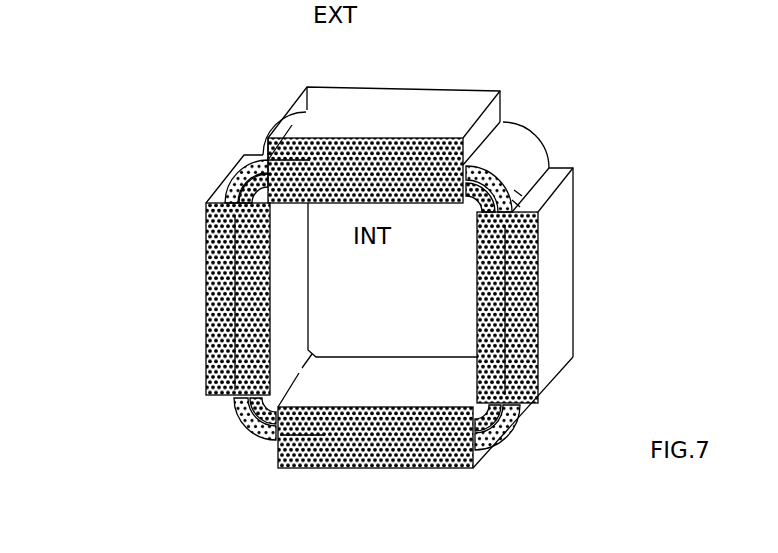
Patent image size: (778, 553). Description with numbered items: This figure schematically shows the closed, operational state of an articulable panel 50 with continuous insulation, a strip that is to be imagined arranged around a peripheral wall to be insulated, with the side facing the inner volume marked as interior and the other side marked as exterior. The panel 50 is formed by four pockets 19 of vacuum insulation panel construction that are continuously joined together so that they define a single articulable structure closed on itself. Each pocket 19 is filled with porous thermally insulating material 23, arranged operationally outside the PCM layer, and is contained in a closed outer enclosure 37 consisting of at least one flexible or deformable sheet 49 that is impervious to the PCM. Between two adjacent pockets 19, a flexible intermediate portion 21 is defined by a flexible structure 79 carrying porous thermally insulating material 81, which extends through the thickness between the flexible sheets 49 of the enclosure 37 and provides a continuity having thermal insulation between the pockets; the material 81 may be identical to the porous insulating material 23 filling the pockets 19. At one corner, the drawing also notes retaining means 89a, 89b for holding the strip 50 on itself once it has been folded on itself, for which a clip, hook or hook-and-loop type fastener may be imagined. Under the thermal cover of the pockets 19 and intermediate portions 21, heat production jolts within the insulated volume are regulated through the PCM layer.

The pocket 19 is at (402, 108).
The intermediate portion 21 is at (260, 143).
The thermally insulating material 23 is at (206, 279).
The closed outer enclosure 37 is at (578, 364).
The flexible sheet 49 is at (205, 240).
The articulable panel 50 is at (566, 131).
The flexible structure 79 is at (228, 163).
The thermally insulating material 81 is at (485, 170).
The retaining means 89a is at (522, 194).
The retaining means 89b is at (520, 204).